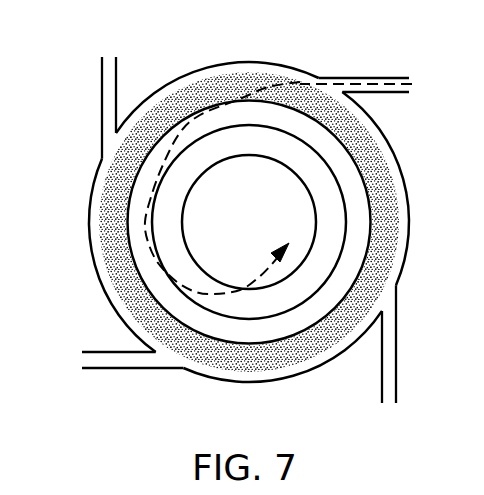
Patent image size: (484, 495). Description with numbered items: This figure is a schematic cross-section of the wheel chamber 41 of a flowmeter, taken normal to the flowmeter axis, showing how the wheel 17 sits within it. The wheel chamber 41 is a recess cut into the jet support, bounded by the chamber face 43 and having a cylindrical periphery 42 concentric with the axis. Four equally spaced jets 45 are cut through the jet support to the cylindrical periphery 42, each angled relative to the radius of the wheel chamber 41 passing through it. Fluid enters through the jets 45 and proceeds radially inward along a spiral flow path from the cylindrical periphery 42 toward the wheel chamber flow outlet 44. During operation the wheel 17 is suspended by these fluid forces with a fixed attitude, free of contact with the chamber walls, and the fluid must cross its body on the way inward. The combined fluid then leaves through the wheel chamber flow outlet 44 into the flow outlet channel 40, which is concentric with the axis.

The wheel 17 is at (103, 199).
The flow outlet channel 40 is at (290, 244).
The wheel chamber 41 is at (217, 294).
The cylindrical periphery 42 is at (207, 63).
The chamber face 43 is at (113, 298).
The wheel chamber flow outlet 44 is at (280, 287).
The jets 45 is at (102, 105).